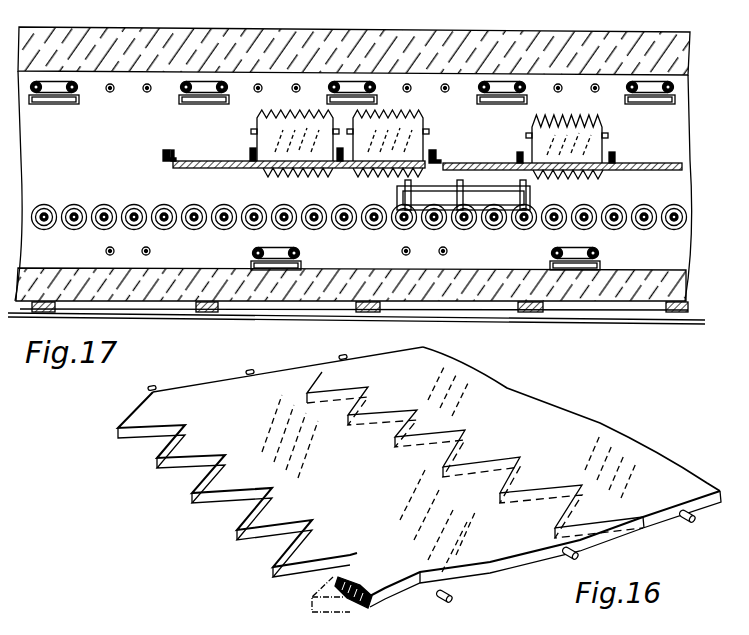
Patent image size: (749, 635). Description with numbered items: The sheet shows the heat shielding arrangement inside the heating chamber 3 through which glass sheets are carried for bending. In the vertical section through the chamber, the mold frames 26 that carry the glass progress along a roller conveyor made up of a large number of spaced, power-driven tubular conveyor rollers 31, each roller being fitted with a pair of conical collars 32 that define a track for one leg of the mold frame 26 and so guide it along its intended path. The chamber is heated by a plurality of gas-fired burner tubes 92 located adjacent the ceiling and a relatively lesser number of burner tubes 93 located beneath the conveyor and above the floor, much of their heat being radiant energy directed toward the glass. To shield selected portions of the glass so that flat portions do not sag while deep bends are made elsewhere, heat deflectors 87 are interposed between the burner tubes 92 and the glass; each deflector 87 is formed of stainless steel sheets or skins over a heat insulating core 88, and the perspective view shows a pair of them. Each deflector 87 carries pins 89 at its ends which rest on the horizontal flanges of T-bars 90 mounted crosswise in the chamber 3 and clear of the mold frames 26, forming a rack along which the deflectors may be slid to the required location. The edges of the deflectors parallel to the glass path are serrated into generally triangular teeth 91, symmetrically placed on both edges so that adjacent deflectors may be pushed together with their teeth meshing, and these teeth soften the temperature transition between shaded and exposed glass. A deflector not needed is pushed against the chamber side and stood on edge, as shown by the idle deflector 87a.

In FIG. 17, the heating chamber 3 is at (318, 46).
In FIG. 17, the mold frame 26 is at (533, 199).
In FIG. 17, the tubular conveyor roller 31 is at (170, 210).
In FIG. 17, the conical collar 32 is at (112, 208).
In FIG. 17, the heat deflector 87 is at (192, 161).
In FIG. 16, the heat deflector 87 is at (582, 437).
In FIG. 17, the idle heat deflector 87a is at (278, 135).
In FIG. 16, the heat insulating core 88 is at (347, 602).
In FIG. 17, the pin 89 is at (172, 150).
In FIG. 16, the pin 89 is at (157, 386).
In FIG. 17, the T-bar 90 is at (163, 156).
In FIG. 16, the teeth 91 is at (430, 442).
In FIG. 17, the burner tube 92 is at (78, 100).
In FIG. 17, the burner tube 93 is at (298, 253).